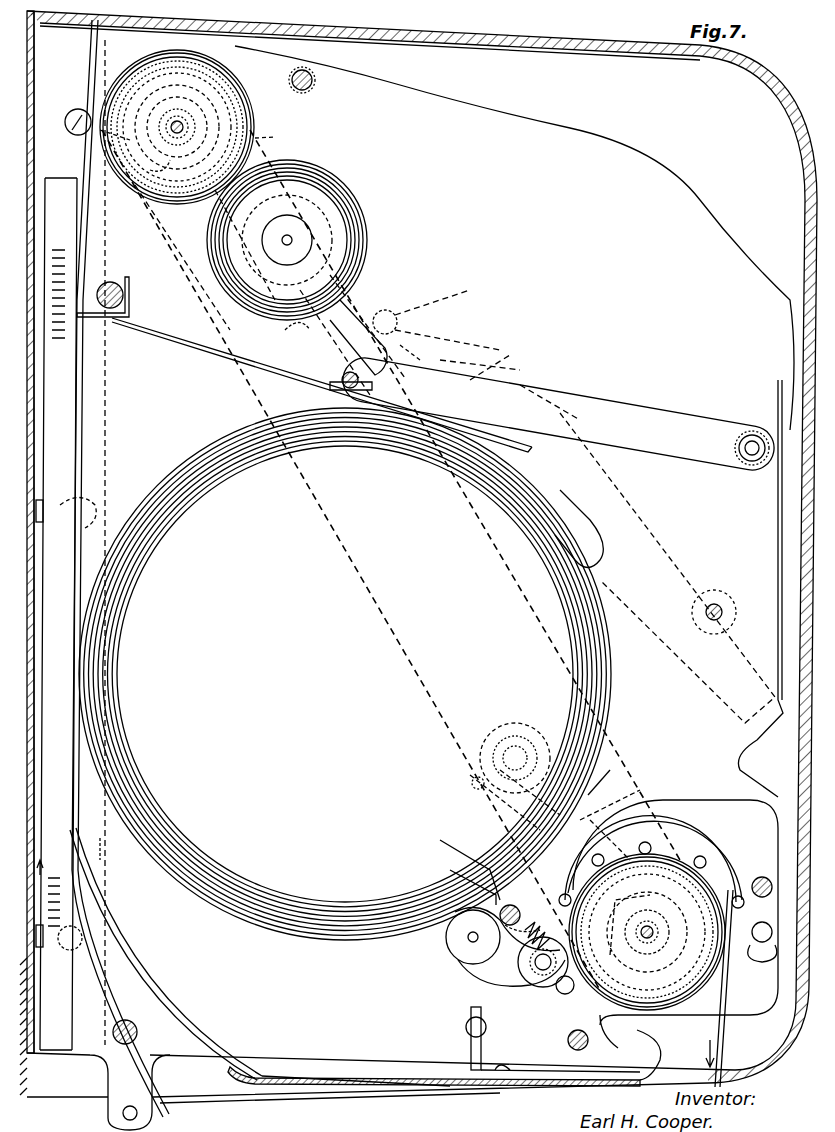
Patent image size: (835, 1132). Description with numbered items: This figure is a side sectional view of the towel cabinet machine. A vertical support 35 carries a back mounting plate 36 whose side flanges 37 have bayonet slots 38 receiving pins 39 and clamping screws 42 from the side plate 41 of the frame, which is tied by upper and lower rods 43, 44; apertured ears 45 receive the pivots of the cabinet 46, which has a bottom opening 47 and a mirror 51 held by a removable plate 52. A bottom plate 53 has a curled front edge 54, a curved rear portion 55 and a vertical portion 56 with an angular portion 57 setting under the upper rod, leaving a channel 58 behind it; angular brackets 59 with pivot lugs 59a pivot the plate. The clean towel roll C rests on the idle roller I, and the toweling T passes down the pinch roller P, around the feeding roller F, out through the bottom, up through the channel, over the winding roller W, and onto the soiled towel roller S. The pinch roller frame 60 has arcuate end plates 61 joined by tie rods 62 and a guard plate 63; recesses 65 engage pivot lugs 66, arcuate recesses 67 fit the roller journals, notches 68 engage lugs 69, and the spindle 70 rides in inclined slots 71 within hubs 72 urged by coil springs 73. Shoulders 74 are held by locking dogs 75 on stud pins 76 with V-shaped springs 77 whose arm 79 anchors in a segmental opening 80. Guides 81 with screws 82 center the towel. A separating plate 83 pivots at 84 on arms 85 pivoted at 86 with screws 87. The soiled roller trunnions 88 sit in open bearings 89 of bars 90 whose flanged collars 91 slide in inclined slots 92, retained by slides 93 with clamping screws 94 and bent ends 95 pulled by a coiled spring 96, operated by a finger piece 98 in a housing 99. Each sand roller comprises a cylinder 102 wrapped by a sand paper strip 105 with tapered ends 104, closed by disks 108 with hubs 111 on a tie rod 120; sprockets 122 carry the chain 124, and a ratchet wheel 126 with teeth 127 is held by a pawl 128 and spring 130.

The vertical support 35 is at (36, 54).
The back mounting plate 36 is at (36, 384).
The side flanges 37 is at (118, 431).
The bayonet slots 38 is at (95, 120).
The pins 39 is at (74, 132).
The side plate 41 is at (514, 534).
The clamping screws 42 is at (95, 498).
The upper tie rod 43 is at (314, 81).
The lower tie rod 44 is at (112, 286).
The apertured ears 45 is at (135, 1117).
The cabinet 46 is at (520, 32).
The bottom opening 47 is at (312, 1096).
The mirror 51 is at (790, 572).
The removable plate 52 is at (798, 548).
The bottom plate 53 is at (355, 1077).
The curled front edge 54 is at (650, 1045).
The curved rear portion 55 is at (135, 1024).
The vertical plate portion 56 is at (98, 836).
The angular portion 57 is at (130, 303).
The vertical channel 58 is at (42, 874).
The angular brackets 59 is at (470, 1048).
The pivot lugs 59a is at (465, 1027).
The pinch roller frame 60 is at (708, 810).
The arcuate end plates 61 is at (712, 822).
The tie rods 62 is at (520, 898).
The guard plate 63 is at (683, 855).
The recesses 65 is at (772, 923).
The pivot lugs 66 is at (759, 955).
The arcuate recesses 67 is at (635, 917).
The notches 68 is at (470, 785).
The lugs 69 is at (565, 995).
The spindle 70 is at (535, 964).
The inclined slots 71 is at (500, 990).
The hubs 72 is at (530, 960).
The coil springs 73 is at (522, 915).
The shoulders 74 is at (492, 890).
The locking dogs 75 is at (482, 870).
The stud pins 76 is at (498, 742).
The V-shaped springs 77 is at (530, 733).
The spring arm 79 is at (600, 778).
The segmental opening 80 is at (585, 812).
The guides 81 is at (60, 398).
The screws 82 is at (42, 524).
The separating plate 83 is at (200, 345).
The pivot 84 is at (345, 378).
The arms 85 is at (550, 396).
The arm pivot 86 is at (742, 462).
The screws 87 is at (752, 456).
The trunnions 88 is at (295, 240).
The open bearings 89 is at (335, 178).
The bearing bars 90 is at (385, 305).
The flanged collars 91 is at (447, 320).
The inclined slots 92 is at (592, 520).
The slides 93 is at (400, 350).
The clamping screws 94 is at (395, 314).
The bent ends 95 is at (545, 410).
The coiled spring 96 is at (499, 360).
The finger piece 98 is at (310, 332).
The housing 99 is at (480, 343).
The tubular cylinder 102 is at (235, 104).
The tapered ends 104 is at (225, 88).
The sand paper strip 105 is at (208, 68).
The disks 108 is at (240, 128).
The hubs 111 is at (407, 547).
The tie rod 120 is at (182, 124).
The sprockets 122 is at (615, 832).
The chain 124 is at (395, 660).
The ratchet wheel 126 is at (268, 140).
The ratchet teeth 127 is at (177, 127).
The pawl 128 is at (170, 257).
The spring 130 is at (207, 245).
The clean towel roll C is at (197, 448).
The soiled towel roller S is at (310, 232).
The winding roller W is at (245, 112).
The toweling T is at (80, 228).
The idle roller I is at (455, 942).
The pinch roller P is at (535, 980).
The feeding roller F is at (712, 976).